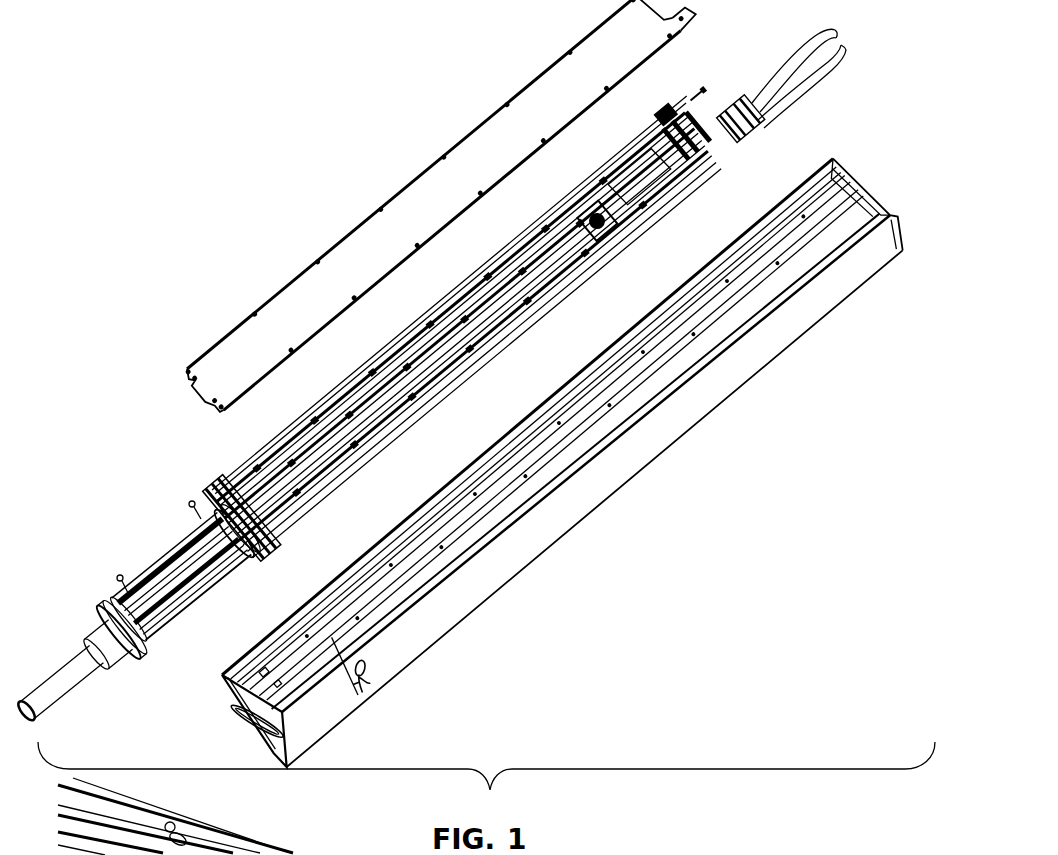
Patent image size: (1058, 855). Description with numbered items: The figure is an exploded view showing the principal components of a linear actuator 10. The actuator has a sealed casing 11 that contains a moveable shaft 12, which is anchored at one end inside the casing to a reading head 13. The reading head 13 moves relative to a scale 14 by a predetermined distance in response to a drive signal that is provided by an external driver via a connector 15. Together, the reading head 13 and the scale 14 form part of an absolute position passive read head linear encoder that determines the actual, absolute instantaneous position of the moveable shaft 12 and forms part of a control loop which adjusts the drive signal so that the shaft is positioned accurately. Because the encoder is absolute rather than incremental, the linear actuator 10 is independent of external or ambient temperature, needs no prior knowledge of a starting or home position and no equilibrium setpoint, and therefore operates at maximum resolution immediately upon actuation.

The linear actuator 10 is at (686, 526).
The sealed casing 11 is at (737, 389).
The moveable shaft 12 is at (62, 668).
The reading head 13 is at (638, 176).
The scale 14 is at (287, 285).
The connector 15 is at (757, 135).